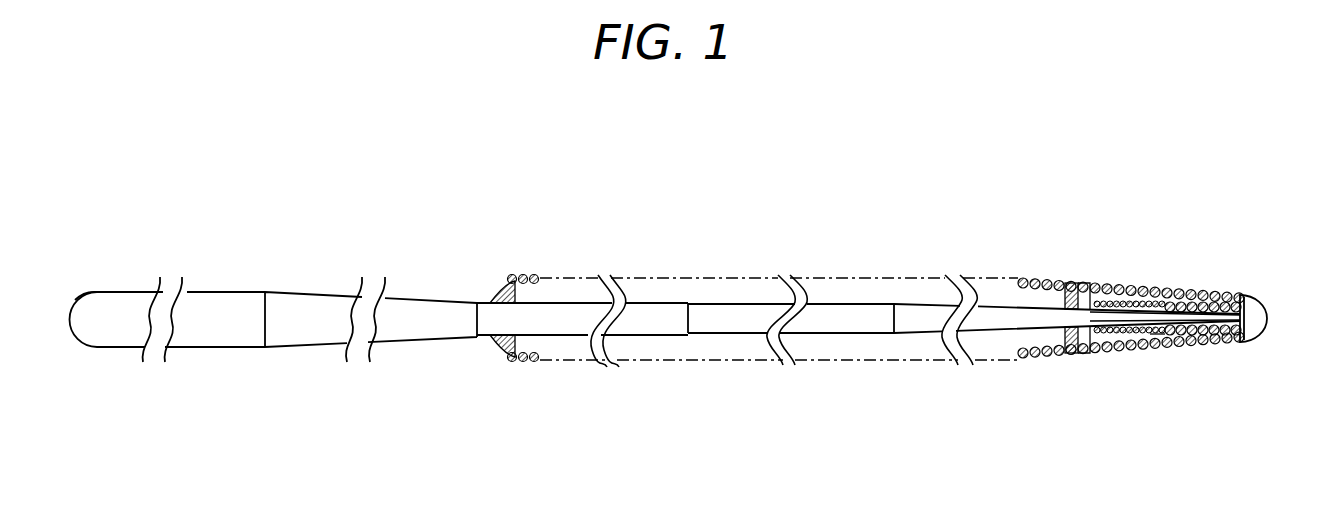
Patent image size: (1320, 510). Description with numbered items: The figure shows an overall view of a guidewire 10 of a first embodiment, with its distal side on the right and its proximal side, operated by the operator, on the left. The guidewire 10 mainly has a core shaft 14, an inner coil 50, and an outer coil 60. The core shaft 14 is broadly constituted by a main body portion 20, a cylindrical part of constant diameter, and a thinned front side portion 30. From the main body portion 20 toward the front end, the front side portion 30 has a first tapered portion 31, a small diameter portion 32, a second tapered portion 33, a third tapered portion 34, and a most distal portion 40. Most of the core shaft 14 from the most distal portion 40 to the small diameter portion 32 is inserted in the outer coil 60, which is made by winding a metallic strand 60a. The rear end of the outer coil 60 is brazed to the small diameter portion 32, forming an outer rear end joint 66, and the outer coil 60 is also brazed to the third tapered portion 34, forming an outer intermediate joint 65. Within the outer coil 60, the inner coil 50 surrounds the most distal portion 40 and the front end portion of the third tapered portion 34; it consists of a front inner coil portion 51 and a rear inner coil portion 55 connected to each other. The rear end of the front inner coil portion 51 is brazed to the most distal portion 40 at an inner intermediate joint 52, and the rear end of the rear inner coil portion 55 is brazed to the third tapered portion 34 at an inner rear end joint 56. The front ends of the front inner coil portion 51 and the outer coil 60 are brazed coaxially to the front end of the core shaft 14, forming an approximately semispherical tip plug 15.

The guidewire 10 is at (755, 166).
The core shaft 14 is at (127, 285).
The tip plug 15 is at (1250, 318).
The main body portion 20 is at (232, 325).
The front side portion 30 is at (1213, 447).
The first tapered portion 31 is at (442, 320).
The small diameter portion 32 is at (558, 317).
The second tapered portion 33 is at (740, 315).
The third tapered portion 34 is at (925, 315).
The most distal portion 40 is at (1193, 315).
The inner coil 50 is at (1148, 220).
The front inner coil portion 51 is at (1185, 302).
The inner intermediate joint 52 is at (1158, 336).
The rear inner coil portion 55 is at (1150, 298).
The inner rear end joint 56 is at (1086, 283).
The outer coil 60 is at (841, 272).
The metallic strand 60a is at (526, 281).
The outer intermediate joint 65 is at (1063, 280).
The outer rear end joint 66 is at (495, 297).